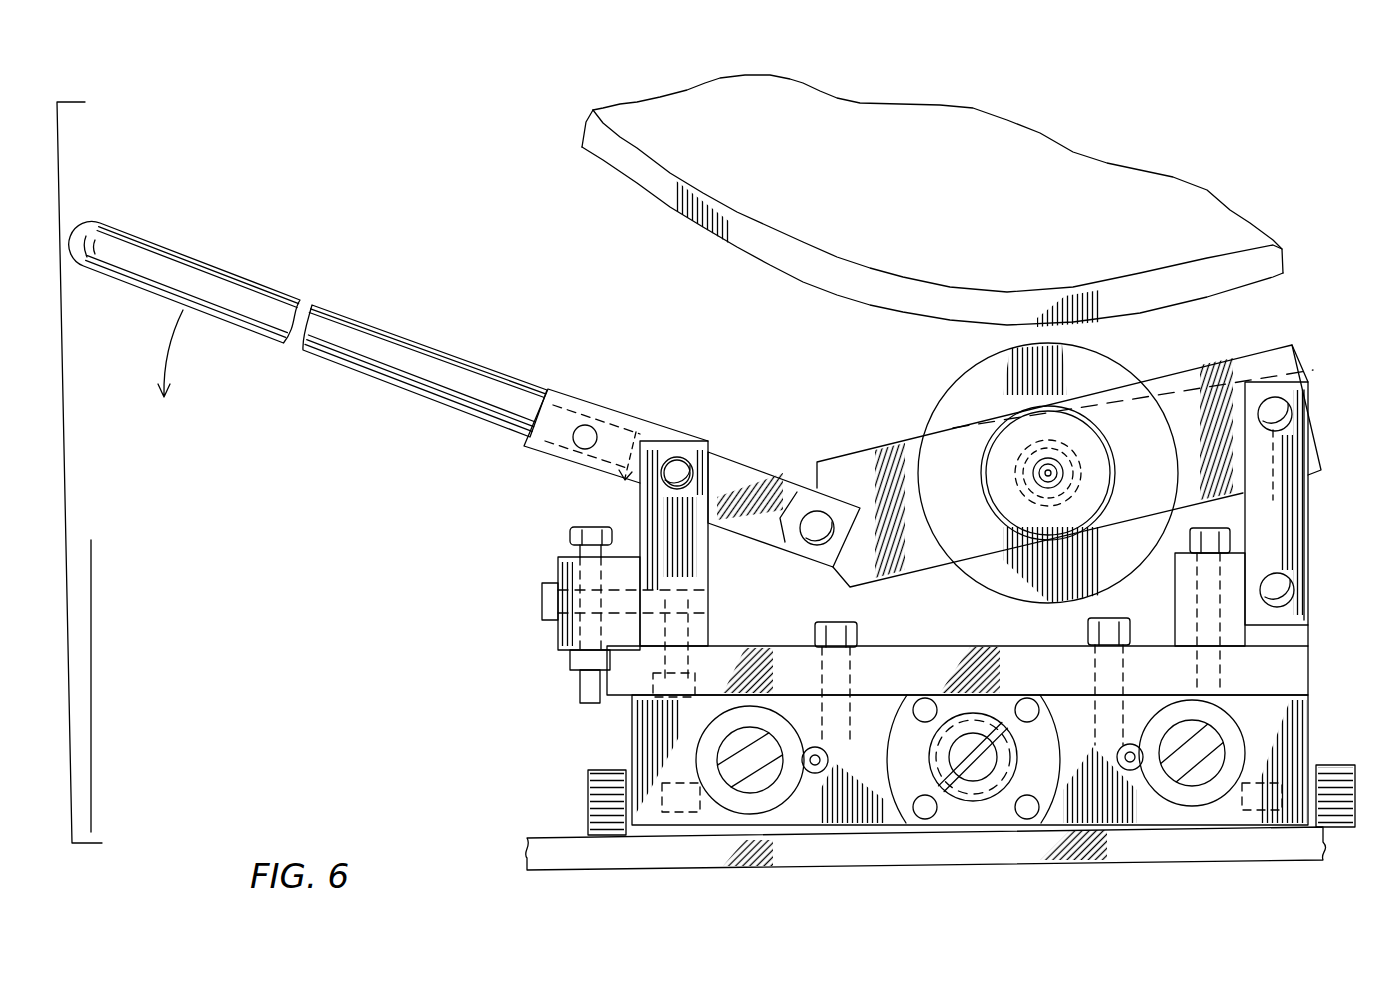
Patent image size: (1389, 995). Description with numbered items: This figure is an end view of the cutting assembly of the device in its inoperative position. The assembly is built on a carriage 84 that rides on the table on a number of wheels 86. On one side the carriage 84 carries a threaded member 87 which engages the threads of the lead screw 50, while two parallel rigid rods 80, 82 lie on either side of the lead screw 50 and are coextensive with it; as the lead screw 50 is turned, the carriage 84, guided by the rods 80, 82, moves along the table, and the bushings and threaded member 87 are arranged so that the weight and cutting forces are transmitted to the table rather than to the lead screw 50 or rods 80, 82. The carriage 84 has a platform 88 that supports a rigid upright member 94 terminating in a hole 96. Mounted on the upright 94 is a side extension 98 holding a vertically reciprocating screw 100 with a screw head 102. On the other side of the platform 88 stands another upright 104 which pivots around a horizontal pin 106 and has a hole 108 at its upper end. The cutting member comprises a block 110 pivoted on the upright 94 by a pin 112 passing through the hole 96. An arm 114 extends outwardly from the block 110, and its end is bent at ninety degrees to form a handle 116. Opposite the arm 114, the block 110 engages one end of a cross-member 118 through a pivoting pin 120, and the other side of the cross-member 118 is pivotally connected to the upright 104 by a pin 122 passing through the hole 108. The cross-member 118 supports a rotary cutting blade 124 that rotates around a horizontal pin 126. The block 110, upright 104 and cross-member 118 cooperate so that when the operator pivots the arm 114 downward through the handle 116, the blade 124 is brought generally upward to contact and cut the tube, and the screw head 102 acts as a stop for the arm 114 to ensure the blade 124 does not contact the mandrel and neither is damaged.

The lead screw 50 is at (968, 787).
The rigid rod 80 is at (1202, 797).
The rigid rod 82 is at (732, 797).
The carriage 84 is at (632, 737).
The wheels 86 is at (590, 797).
The threaded member 87 is at (1053, 793).
The platform 88 is at (745, 652).
The rigid upright member 94 is at (643, 530).
The hole 96 is at (690, 474).
The side extension 98 is at (557, 575).
The screw 100 is at (580, 551).
The screw head 102 is at (568, 537).
The upright 104 is at (1290, 523).
The horizontal pin 106 is at (1282, 590).
The hole 108 is at (1278, 417).
The block 110 is at (585, 403).
The pin 112 is at (675, 467).
The arm 114 is at (373, 368).
The handle 116 is at (118, 247).
The cross-member 118 is at (867, 467).
The pivoting pin 120 is at (813, 521).
The pin 122 is at (1300, 382).
The rotary cutting blade 124 is at (940, 417).
The horizontal pin 126 is at (1040, 477).